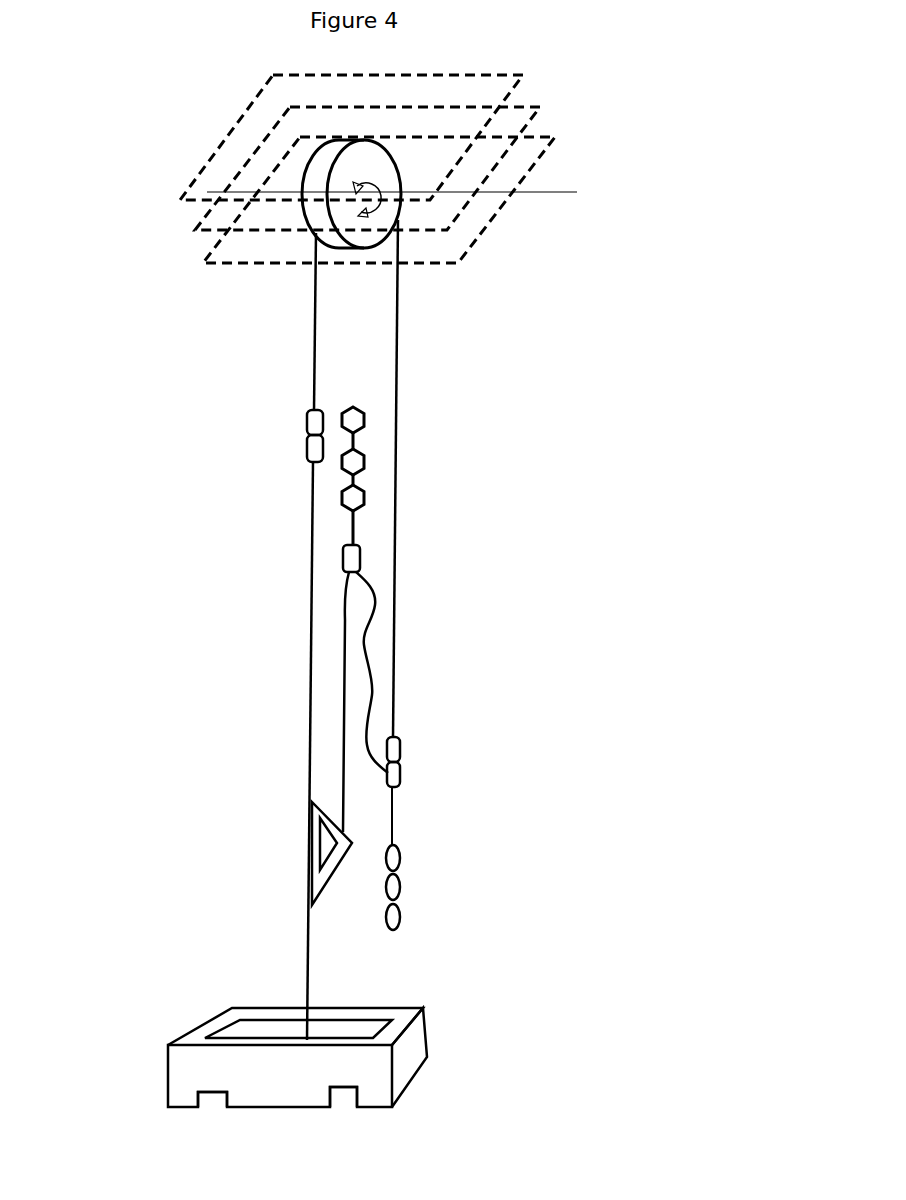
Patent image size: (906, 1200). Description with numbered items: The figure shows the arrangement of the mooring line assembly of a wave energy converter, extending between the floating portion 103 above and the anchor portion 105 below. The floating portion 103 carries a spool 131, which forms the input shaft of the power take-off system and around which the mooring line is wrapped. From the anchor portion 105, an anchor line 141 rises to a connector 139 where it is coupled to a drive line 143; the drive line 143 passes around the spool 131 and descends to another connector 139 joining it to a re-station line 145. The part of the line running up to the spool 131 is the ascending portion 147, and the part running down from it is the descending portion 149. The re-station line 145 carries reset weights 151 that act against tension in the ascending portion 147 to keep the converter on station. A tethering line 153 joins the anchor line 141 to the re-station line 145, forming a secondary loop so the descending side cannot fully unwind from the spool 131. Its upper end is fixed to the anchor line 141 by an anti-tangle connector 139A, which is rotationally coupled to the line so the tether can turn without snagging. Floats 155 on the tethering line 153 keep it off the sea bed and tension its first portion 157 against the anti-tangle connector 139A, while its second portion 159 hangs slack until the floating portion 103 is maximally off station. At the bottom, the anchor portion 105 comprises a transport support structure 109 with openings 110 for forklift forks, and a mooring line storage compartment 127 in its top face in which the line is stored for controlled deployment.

The floating portion 103 is at (135, 272).
The spool 131 is at (377, 160).
The drive line 143 is at (313, 338).
The anchor line 141 is at (312, 613).
The ascending portion 147 is at (290, 537).
The descending portion 149 is at (403, 571).
The connector 139 is at (282, 415).
The anti-tangle connector 139A is at (330, 873).
The floats 155 is at (360, 496).
The tethering line 153 is at (367, 573).
The first portion 157 is at (343, 718).
The second portion 159 is at (367, 667).
The re-station line 145 is at (393, 813).
The reset weights 151 is at (402, 860).
The anchor portion 105 is at (178, 1068).
The transport support structure 109 is at (417, 1042).
The mooring line storage compartment 127 is at (267, 1033).
The openings 110 is at (212, 1108).